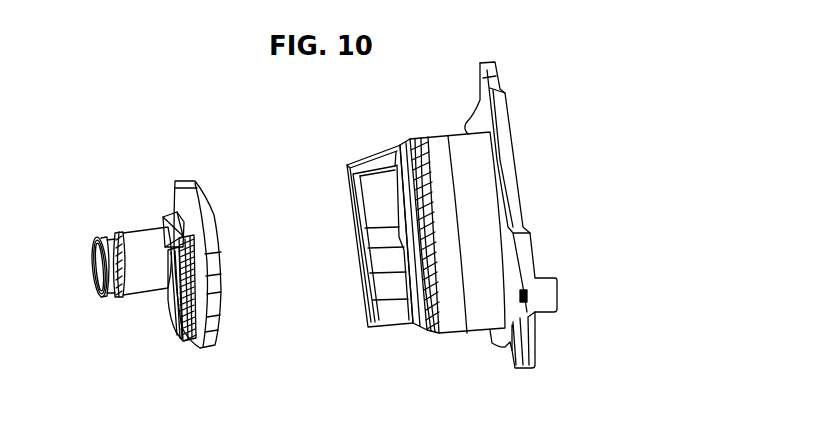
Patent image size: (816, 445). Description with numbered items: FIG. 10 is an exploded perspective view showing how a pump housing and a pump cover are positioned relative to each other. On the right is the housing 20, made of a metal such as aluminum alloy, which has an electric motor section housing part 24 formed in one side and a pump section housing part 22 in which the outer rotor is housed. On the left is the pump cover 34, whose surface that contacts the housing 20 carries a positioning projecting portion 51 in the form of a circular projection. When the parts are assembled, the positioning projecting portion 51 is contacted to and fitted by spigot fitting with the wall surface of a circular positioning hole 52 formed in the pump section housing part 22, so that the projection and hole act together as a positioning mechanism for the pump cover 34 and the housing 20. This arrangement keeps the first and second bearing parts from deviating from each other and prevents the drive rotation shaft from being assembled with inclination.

The housing 20 is at (350, 267).
The pump section housing part 22 is at (362, 245).
The electric motor section housing part 24 is at (445, 131).
The pump cover 34 is at (206, 347).
The positioning projecting portion 51 is at (161, 279).
The positioning hole 52 is at (351, 212).